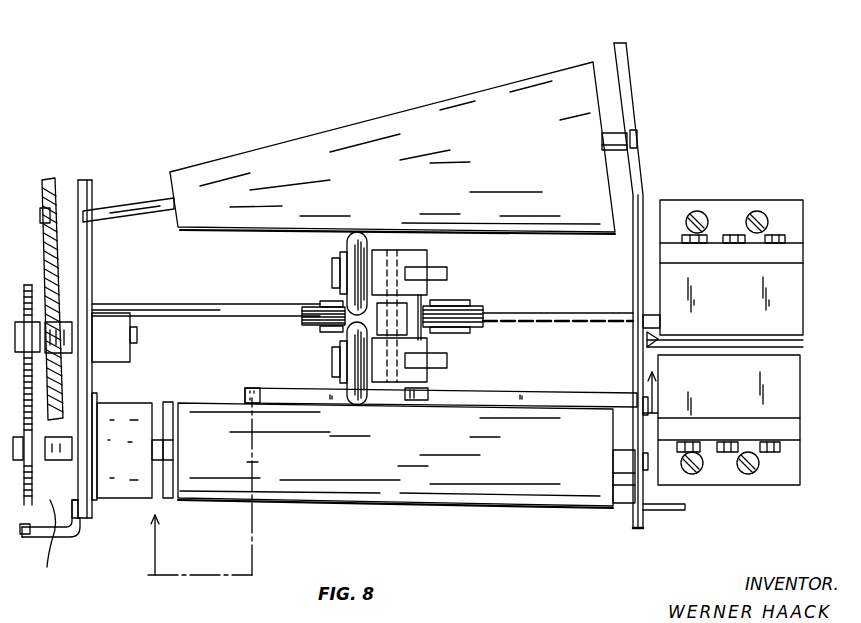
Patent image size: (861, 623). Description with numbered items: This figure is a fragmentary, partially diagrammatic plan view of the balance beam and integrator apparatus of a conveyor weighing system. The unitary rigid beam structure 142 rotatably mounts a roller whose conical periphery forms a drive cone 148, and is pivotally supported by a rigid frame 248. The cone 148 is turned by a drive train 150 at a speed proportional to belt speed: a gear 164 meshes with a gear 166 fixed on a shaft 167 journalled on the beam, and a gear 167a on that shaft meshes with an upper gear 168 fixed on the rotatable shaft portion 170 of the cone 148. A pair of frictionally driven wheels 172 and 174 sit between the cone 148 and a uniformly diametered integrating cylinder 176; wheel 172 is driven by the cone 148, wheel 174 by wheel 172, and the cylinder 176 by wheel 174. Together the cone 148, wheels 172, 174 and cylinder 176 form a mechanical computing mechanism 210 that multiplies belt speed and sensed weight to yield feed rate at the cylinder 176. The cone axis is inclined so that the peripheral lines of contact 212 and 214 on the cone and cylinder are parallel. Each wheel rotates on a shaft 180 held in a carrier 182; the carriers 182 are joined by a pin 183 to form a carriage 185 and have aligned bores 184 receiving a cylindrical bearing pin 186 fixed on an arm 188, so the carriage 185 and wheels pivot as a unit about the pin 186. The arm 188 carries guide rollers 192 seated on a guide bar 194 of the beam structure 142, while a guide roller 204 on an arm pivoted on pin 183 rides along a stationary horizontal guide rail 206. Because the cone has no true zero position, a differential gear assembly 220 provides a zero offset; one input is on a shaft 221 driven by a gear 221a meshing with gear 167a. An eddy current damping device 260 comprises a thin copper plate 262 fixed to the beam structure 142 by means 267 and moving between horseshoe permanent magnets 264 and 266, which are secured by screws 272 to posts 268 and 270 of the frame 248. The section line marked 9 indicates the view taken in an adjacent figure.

The section line 9- 9 is at (403, 487).
The beam structure 142 is at (92, 185).
The drive cone 148 is at (470, 93).
The drive train 150 is at (55, 163).
The gear 164 is at (25, 535).
The gear 166 is at (28, 286).
The shaft 167 is at (70, 338).
The gear 167a is at (63, 274).
The upper gear 168 is at (57, 181).
The rotatable shaft portion 170 is at (110, 200).
The friction wheel 172 is at (345, 240).
The friction wheel 174 is at (332, 340).
The integrating cylinder 176 is at (399, 455).
The shaft 180 is at (330, 272).
The carrier 182 is at (428, 262).
The pin 183 is at (428, 303).
The bores 184 is at (413, 258).
The carriage 185 is at (385, 245).
The cylindrical bearing pin 186 is at (399, 258).
The arm 188 is at (385, 340).
The guide rollers 192 is at (318, 316).
The guide bar 194 is at (515, 308).
The guide roller 204 is at (415, 402).
The guide rail 206 is at (540, 398).
The mechanical computing mechanism 210 is at (483, 506).
The peripheral line of contact 212 is at (198, 228).
The peripheral line of contact 214 is at (200, 403).
The differential gear assembly 220 is at (123, 403).
The shaft 221 is at (63, 450).
The gear 221a is at (61, 543).
The frame 248 is at (90, 516).
The eddy current damping device 260 is at (808, 325).
The plate 262 is at (803, 346).
The permanent magnet 264 is at (800, 383).
The permanent magnet 266 is at (803, 303).
The fixing means 267 is at (658, 350).
The post 268 is at (712, 446).
The post 270 is at (715, 242).
The screws 272 is at (786, 233).